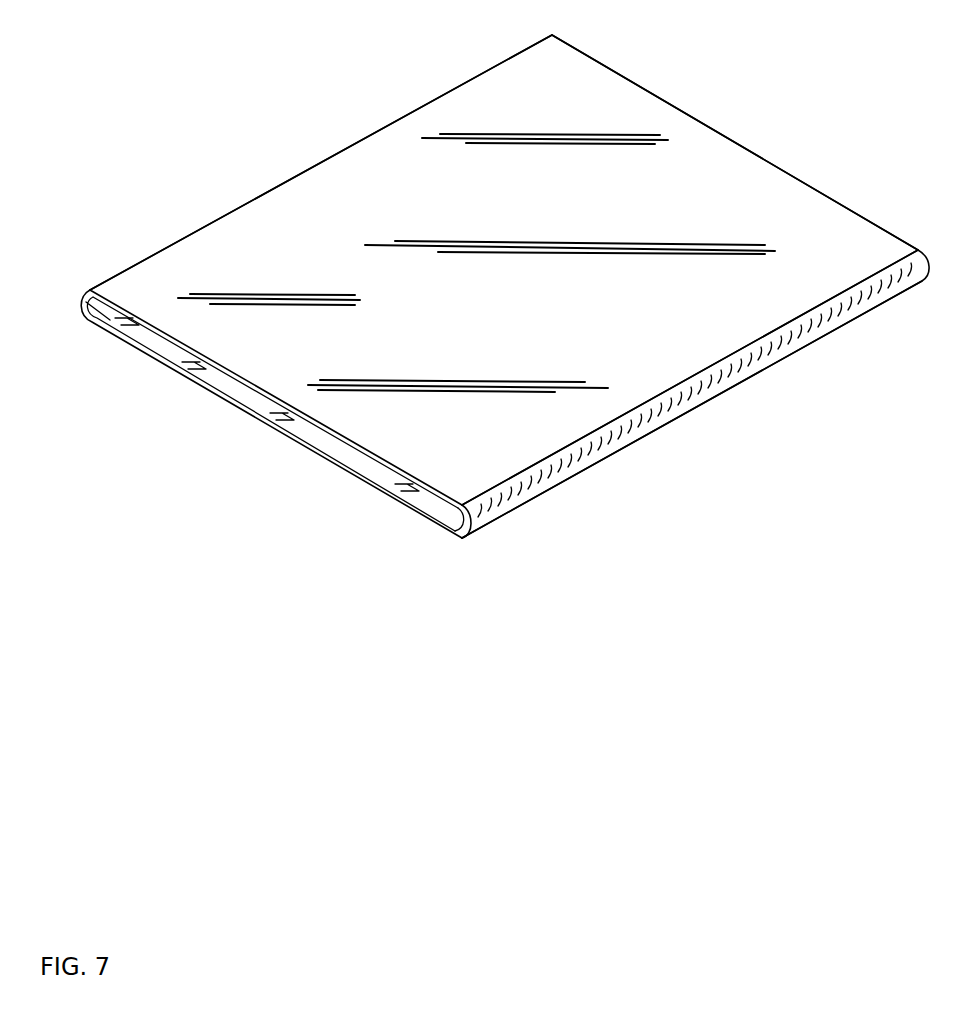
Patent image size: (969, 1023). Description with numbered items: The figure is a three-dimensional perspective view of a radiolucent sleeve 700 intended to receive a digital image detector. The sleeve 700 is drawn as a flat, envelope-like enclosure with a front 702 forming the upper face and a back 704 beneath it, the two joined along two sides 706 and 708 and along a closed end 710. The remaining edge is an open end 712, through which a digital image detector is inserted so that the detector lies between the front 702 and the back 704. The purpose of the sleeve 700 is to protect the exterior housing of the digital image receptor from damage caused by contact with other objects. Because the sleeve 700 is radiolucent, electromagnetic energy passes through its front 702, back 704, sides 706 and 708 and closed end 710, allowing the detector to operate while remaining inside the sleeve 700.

The radiolucent sleeve 700 is at (783, 908).
The front 702 is at (353, 172).
The back 704 is at (555, 482).
The side 706 is at (162, 250).
The side 708 is at (748, 362).
The closed end 710 is at (743, 146).
The open end 712 is at (342, 455).